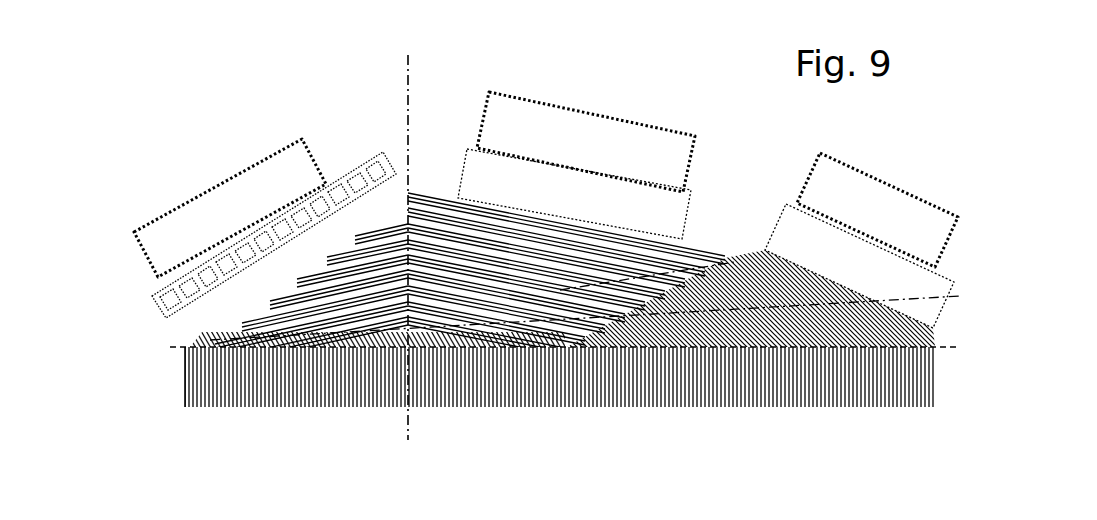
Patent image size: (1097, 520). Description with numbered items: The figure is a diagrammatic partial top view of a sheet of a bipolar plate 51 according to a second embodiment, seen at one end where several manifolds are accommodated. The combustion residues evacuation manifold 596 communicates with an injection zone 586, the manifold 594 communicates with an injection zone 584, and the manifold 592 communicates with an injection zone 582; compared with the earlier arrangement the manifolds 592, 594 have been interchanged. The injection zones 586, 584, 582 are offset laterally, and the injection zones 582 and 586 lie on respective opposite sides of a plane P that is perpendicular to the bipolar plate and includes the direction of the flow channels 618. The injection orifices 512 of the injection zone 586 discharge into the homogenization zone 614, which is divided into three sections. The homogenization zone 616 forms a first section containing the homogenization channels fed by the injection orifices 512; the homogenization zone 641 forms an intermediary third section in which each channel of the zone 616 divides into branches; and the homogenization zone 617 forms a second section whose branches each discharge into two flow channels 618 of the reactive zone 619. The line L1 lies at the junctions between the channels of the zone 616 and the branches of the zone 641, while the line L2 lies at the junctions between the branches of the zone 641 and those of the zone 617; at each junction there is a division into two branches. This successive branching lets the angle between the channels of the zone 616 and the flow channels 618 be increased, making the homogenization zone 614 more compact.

The bipolar plate 51 is at (861, 216).
The injection orifices 512 is at (183, 309).
The injection zone 582 is at (548, 194).
The injection zone 584 is at (860, 272).
The injection zone 586 is at (160, 330).
The manifold 592 is at (605, 157).
The manifold 594 is at (885, 219).
The combustion residues evacuation manifold 596 is at (240, 227).
The homogenization zone 614 is at (725, 257).
The homogenization zone 616 is at (396, 248).
The homogenization zone 617 is at (762, 330).
The flow channels 618 is at (842, 408).
The reactive zone 619 is at (185, 392).
The homogenization zone 641 is at (555, 312).
The plane P is at (409, 96).
The line L1 is at (330, 320).
The line L2 is at (453, 330).